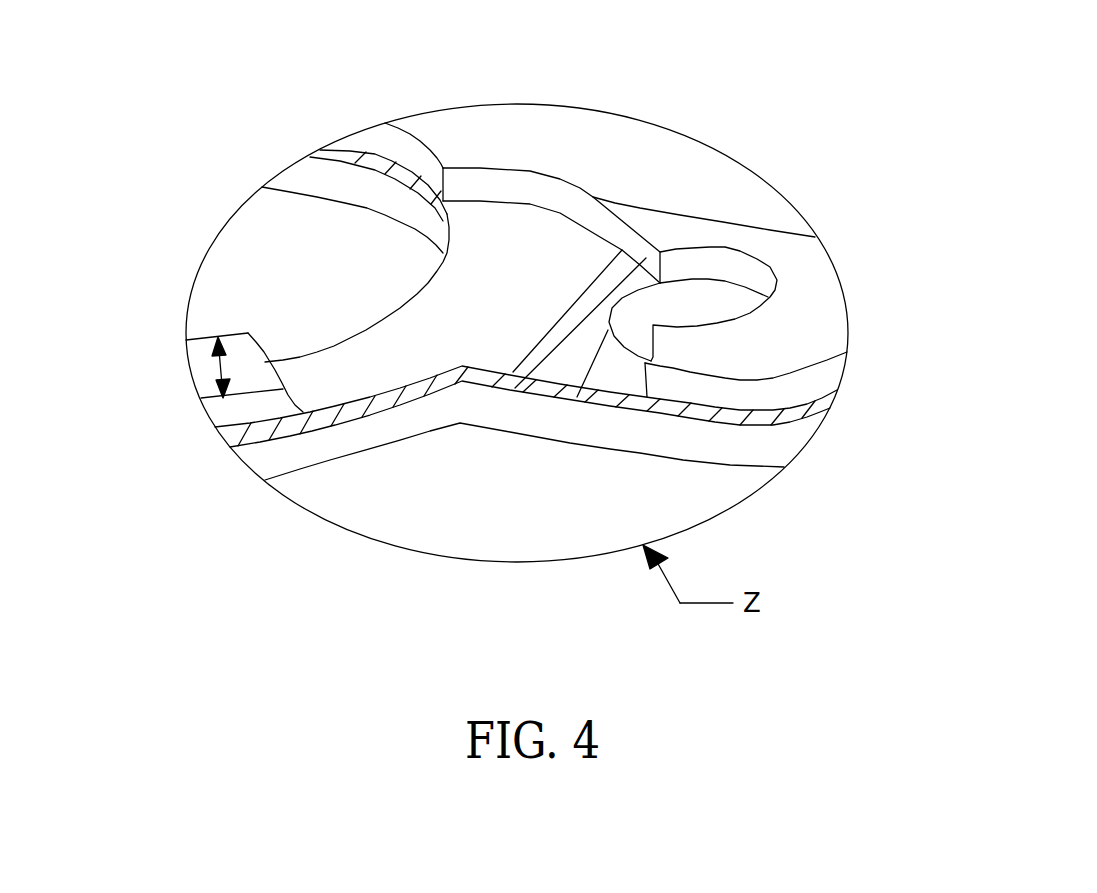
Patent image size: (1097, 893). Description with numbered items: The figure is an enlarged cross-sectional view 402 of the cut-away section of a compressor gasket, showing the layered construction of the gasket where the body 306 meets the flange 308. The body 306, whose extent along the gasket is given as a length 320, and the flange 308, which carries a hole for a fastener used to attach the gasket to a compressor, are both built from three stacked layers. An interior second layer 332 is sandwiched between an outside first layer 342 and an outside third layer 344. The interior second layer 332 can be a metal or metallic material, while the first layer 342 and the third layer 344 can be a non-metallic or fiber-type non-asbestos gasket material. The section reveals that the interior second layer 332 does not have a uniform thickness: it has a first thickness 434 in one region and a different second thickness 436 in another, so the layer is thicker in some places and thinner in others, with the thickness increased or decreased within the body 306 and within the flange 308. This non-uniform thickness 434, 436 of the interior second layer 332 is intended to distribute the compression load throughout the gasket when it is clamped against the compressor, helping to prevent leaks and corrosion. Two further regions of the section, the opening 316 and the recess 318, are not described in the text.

The body 306 is at (537, 142).
The flange 308 is at (675, 235).
The opening 316 is at (690, 279).
The recessed region 318 is at (293, 270).
The length 320 is at (222, 368).
The interior second layer 332 is at (803, 415).
The first layer 342 is at (815, 307).
The third layer 344 is at (770, 448).
The detail view 402 is at (1014, 99).
The first thickness 434 is at (451, 337).
The second thickness 436 is at (577, 342).